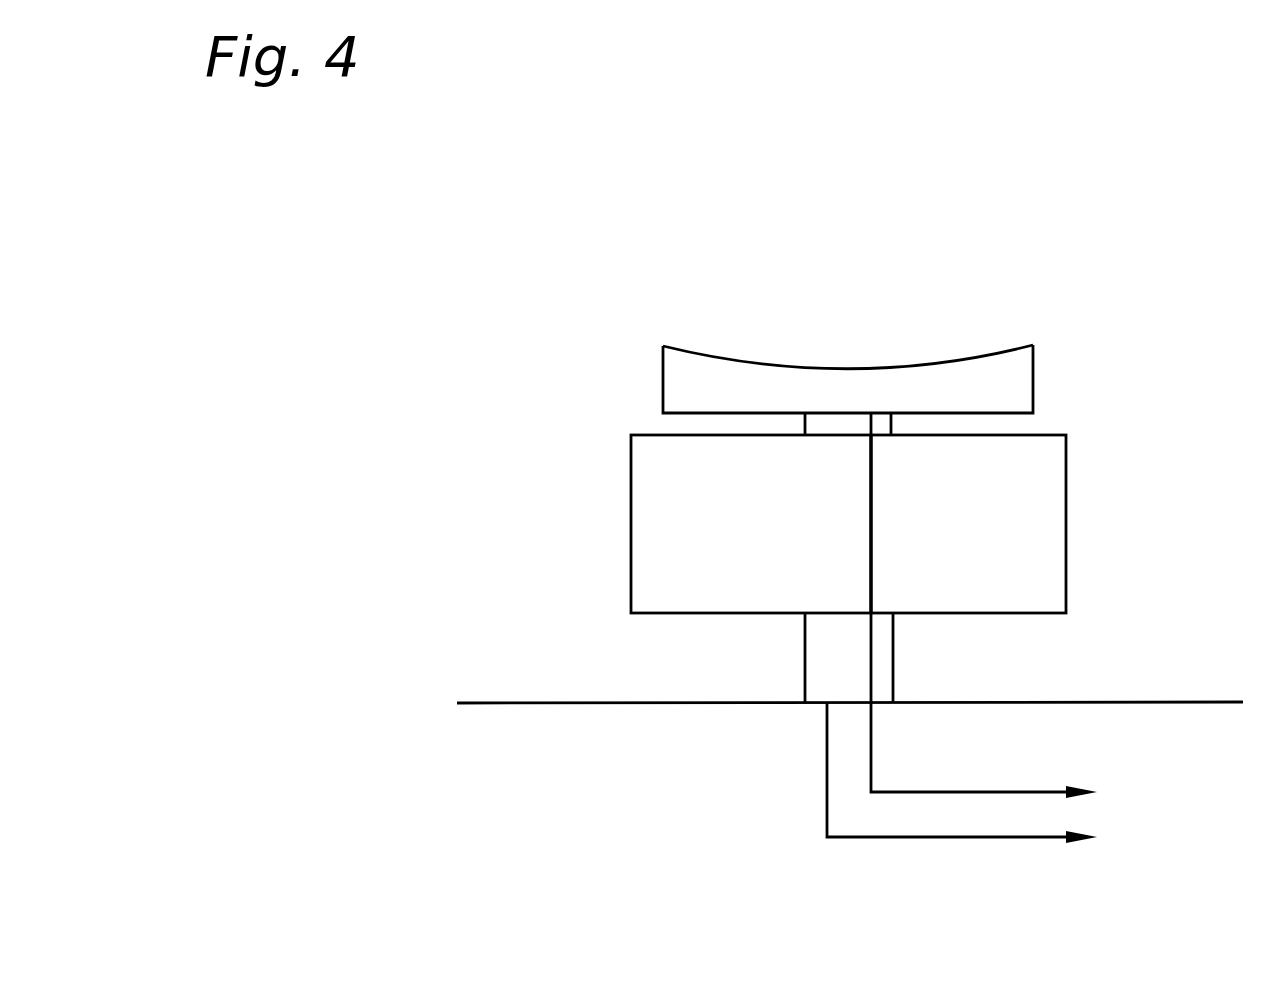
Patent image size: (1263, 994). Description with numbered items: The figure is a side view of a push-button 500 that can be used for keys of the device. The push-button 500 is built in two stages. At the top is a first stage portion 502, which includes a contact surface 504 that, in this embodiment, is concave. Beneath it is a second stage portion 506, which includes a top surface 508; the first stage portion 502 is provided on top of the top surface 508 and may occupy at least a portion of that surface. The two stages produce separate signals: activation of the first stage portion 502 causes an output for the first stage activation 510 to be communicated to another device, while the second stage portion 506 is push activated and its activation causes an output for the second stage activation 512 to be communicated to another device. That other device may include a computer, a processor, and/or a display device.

The push-button 500 is at (1082, 270).
The first stage portion 502 is at (662, 376).
The contact surface 504 is at (713, 352).
The second stage portion 506 is at (629, 522).
The top surface 508 is at (1047, 435).
The output for the first stage activation 510 is at (1008, 792).
The output for the second stage activation 512 is at (1010, 837).